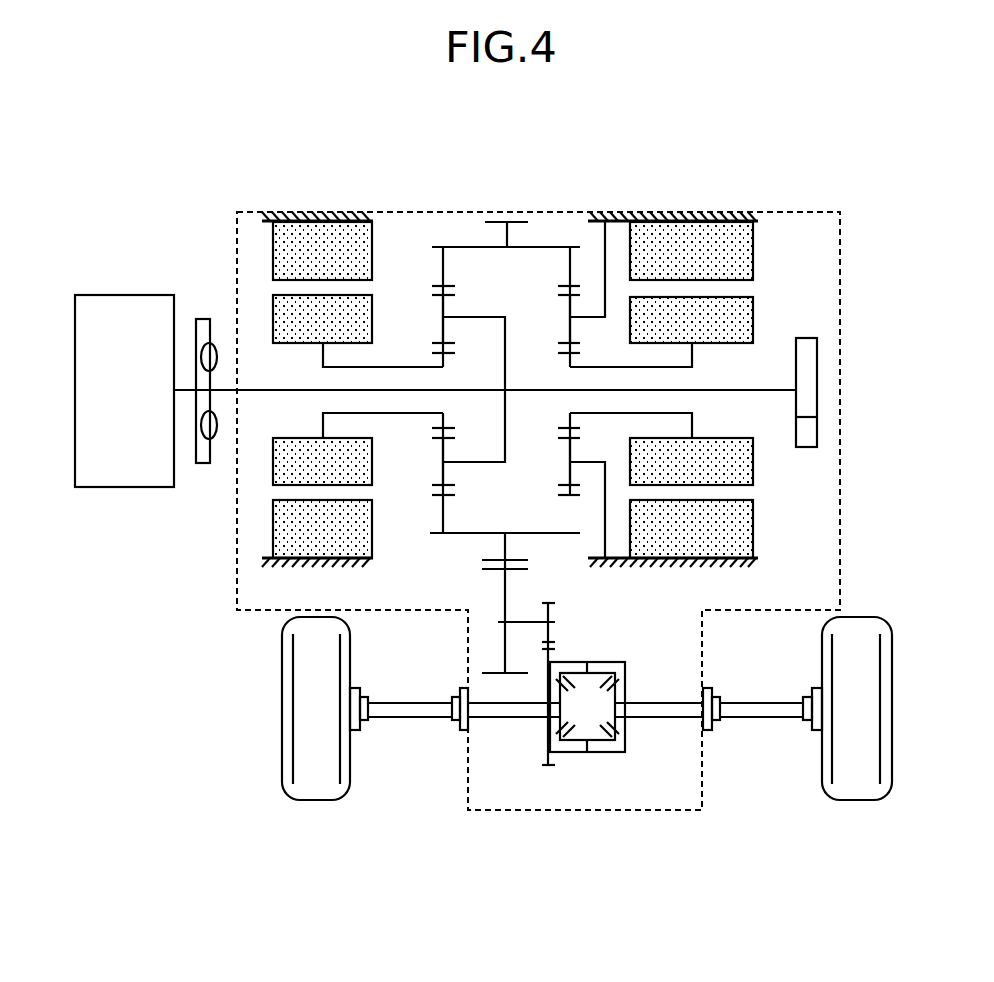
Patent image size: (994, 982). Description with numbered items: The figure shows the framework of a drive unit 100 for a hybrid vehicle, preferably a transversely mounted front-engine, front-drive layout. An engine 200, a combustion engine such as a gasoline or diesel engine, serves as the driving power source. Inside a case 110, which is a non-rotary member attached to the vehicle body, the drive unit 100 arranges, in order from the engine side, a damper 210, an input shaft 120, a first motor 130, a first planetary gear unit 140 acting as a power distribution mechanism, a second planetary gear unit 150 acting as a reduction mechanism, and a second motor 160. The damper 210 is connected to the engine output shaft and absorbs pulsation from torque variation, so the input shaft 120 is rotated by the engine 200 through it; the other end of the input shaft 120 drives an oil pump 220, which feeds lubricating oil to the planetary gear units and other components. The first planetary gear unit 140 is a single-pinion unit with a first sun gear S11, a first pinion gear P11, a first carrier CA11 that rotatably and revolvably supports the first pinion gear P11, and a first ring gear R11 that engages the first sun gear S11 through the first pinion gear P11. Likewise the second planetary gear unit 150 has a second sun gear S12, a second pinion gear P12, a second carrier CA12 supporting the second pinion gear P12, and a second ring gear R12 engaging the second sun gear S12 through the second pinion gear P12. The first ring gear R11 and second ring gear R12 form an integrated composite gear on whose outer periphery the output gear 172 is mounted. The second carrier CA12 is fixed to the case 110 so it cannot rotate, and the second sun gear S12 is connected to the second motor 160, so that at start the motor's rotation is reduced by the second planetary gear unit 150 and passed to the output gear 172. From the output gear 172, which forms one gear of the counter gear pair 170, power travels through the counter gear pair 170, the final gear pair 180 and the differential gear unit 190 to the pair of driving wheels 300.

The drive unit 100 is at (331, 127).
The case 110 is at (357, 212).
The input shaft 120 is at (768, 393).
The first motor 130 is at (258, 262).
The first planetary gear unit 140 is at (484, 353).
The second planetary gear unit 150 is at (571, 365).
The second motor 160 is at (777, 256).
The counter gear pair 170 is at (468, 562).
The output gear 172 is at (517, 222).
The final gear pair 180 is at (566, 637).
The differential gear unit 190 is at (617, 766).
The engine 200 is at (104, 300).
The damper 210 is at (203, 323).
The oil pump 220 is at (807, 345).
The driving wheels 300 is at (318, 797).
The first ring gear R11 is at (437, 283).
The first pinion gear P11 is at (439, 303).
The first sun gear S11 is at (435, 360).
The first carrier CA11 is at (487, 317).
The second ring gear R12 is at (563, 285).
The second pinion gear P12 is at (556, 342).
The second sun gear S12 is at (562, 355).
The second carrier CA12 is at (604, 321).